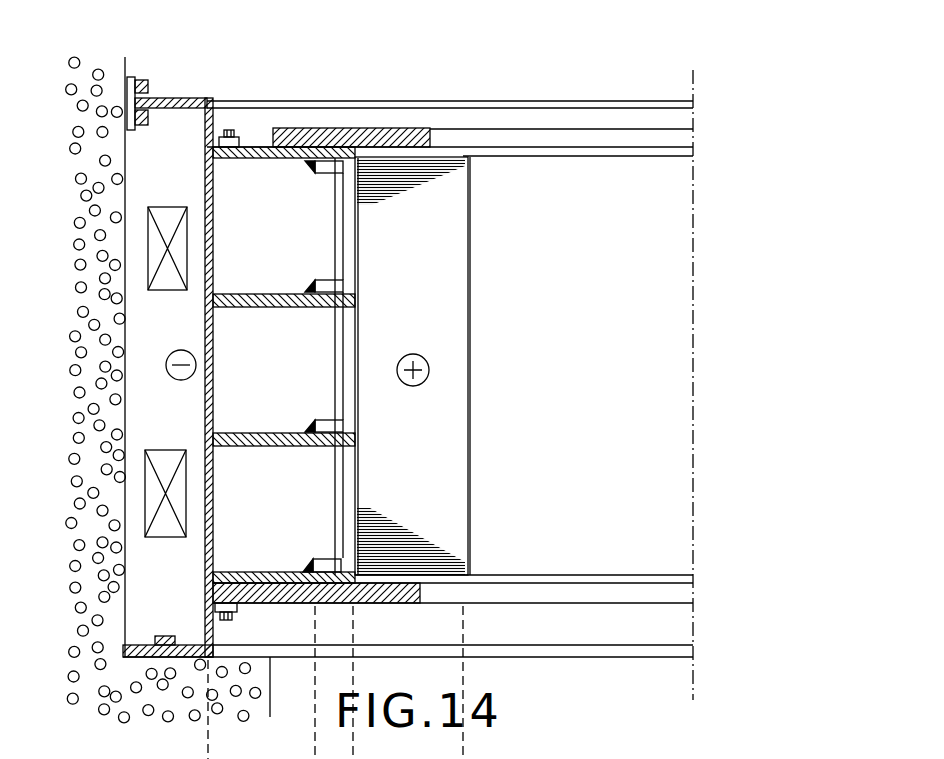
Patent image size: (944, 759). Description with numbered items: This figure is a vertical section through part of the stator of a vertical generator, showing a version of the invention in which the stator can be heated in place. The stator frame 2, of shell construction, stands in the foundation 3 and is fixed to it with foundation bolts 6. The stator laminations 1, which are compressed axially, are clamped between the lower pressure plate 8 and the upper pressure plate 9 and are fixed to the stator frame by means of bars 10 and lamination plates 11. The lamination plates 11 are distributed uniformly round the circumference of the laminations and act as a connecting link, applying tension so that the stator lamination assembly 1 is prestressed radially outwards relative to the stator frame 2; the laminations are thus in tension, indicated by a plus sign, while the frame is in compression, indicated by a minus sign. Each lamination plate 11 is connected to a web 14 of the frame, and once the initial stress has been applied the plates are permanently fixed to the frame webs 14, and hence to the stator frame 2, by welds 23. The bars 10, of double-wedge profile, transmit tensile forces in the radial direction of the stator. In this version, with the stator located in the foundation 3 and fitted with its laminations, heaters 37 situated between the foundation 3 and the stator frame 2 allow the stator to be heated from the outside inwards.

The stator laminations 1 is at (440, 295).
The stator frame 2 is at (183, 107).
The foundation 3 is at (100, 350).
The foundation bolts 6 is at (144, 83).
The lower pressure plate 8 is at (277, 598).
The upper pressure plate 9 is at (300, 137).
The bars 10 is at (345, 253).
The lamination plates 11 is at (325, 284).
The frame web 14 is at (245, 445).
The welds 23 is at (312, 166).
The heaters 37 is at (160, 458).